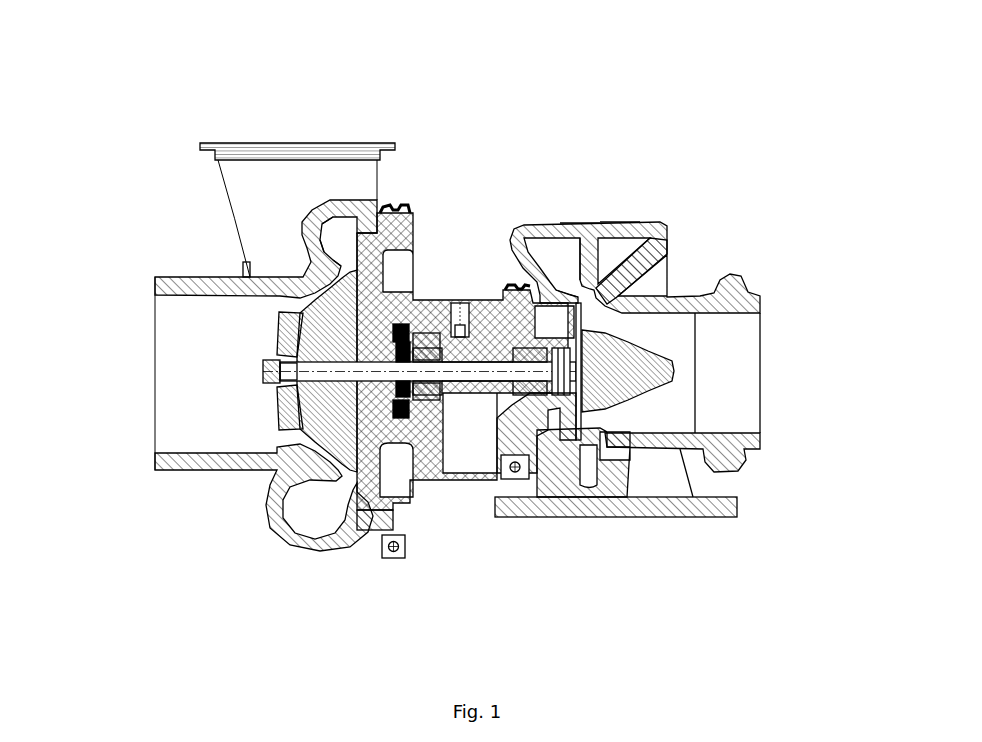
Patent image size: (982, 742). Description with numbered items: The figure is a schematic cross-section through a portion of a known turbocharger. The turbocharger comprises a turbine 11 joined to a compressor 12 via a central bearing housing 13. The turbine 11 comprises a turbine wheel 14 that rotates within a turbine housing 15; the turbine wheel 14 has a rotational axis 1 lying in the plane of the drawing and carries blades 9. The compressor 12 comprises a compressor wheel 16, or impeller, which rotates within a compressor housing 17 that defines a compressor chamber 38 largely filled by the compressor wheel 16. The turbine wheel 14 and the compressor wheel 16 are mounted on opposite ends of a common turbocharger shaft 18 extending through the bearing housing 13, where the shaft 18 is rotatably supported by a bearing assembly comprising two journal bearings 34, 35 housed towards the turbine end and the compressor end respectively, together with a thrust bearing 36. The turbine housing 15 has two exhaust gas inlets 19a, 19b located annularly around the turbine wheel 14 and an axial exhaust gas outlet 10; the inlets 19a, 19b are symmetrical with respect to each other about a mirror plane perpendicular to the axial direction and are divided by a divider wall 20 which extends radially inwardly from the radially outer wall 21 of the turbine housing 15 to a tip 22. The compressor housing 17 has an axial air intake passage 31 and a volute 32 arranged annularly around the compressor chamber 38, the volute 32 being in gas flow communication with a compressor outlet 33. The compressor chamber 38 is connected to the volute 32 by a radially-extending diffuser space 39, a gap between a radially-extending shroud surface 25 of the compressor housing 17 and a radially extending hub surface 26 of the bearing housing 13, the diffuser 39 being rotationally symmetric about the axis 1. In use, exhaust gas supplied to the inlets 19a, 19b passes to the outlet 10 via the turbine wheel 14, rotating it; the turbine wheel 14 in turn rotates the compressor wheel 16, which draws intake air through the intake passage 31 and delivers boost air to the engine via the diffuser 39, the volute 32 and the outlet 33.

The rotational axis 1 is at (247, 372).
The blades 9 is at (618, 340).
The exhaust gas outlet 10 is at (683, 340).
The turbine 11 is at (617, 185).
The compressor 12 is at (182, 514).
The bearing housing 13 is at (442, 268).
The turbine wheel 14 is at (600, 383).
The turbine housing 15 is at (703, 447).
The compressor wheel 16 is at (292, 357).
The compressor housing 17 is at (283, 283).
The turbocharger shaft 18 is at (497, 383).
The exhaust gas inlet 19a is at (637, 247).
The exhaust gas inlet 19b is at (553, 247).
The divider wall 20 is at (583, 238).
The radially outer wall 21 is at (608, 224).
The tip 22 is at (583, 297).
The shroud surface 25 is at (335, 245).
The hub surface 26 is at (357, 258).
The air intake passage 31 is at (178, 322).
The volute 32 is at (338, 240).
The compressor outlet 33 is at (230, 143).
The journal bearing 34 is at (533, 383).
The journal bearing 35 is at (433, 383).
The thrust bearing 36 is at (403, 328).
The compressor chamber 38 is at (316, 330).
The diffuser space 39 is at (350, 262).